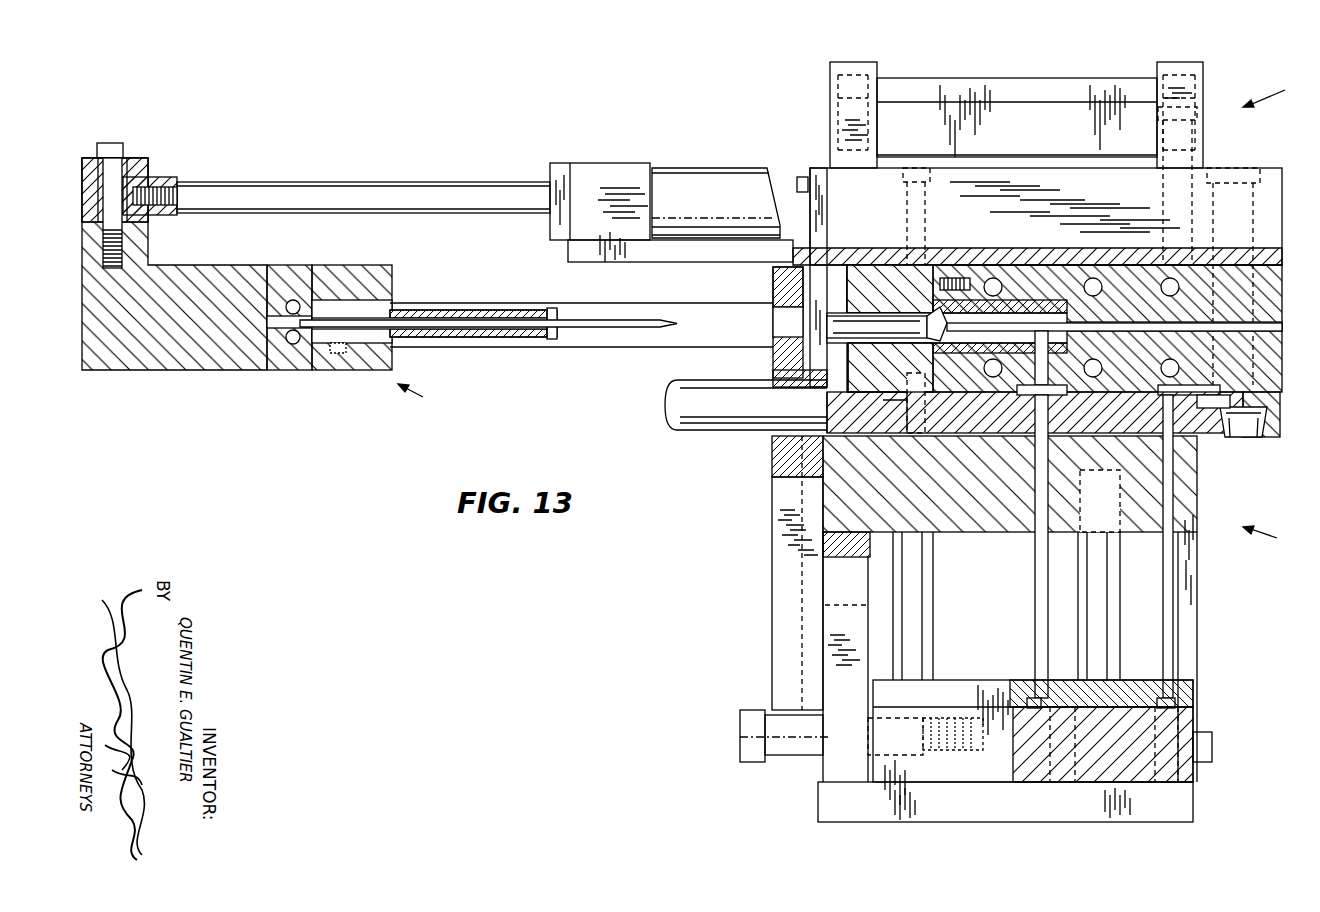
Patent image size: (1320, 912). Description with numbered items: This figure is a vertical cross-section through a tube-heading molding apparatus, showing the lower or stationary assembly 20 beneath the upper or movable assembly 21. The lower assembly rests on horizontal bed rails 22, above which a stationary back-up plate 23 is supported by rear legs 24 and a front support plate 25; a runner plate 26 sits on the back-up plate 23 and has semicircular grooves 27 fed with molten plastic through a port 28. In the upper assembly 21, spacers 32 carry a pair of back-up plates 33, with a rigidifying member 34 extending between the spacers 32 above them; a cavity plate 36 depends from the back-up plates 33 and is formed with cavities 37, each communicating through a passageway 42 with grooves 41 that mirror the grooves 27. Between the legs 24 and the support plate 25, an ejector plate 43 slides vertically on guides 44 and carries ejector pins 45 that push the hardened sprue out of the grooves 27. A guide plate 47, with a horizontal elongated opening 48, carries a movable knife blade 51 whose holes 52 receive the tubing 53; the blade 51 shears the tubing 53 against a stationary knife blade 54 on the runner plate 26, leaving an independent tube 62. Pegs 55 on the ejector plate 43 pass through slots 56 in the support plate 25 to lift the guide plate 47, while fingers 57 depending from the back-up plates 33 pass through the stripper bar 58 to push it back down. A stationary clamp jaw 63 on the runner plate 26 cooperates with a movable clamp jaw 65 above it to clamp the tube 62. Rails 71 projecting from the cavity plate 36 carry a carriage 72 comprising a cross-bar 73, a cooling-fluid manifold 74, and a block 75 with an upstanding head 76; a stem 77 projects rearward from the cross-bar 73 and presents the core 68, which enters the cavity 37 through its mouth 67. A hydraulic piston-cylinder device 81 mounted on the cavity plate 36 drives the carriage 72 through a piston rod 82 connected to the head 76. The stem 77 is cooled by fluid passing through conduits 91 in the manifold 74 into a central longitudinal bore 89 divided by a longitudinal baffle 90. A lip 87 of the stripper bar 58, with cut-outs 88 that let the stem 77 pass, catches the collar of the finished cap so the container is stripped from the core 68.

The lower assembly 20 is at (1276, 541).
The upper assembly 21 is at (1272, 92).
The bed rails 22 is at (1000, 810).
The back-up plate 23 is at (1197, 487).
The rear legs 24 is at (1198, 625).
The front support plate 25 is at (825, 670).
The runner plate 26 is at (1280, 405).
The grooves 27 is at (1200, 430).
The port 28 is at (1255, 435).
The spacers 32 is at (832, 70).
The back-up plates 33 is at (1270, 210).
The rigidifying member 34 is at (1013, 80).
The cavity plate 36 is at (1268, 297).
The cavities 37 is at (1000, 312).
The grooves 41 is at (1212, 385).
The passageway 42 is at (1038, 368).
The ejector plate 43 is at (950, 685).
The guides 44 is at (930, 572).
The ejector pins 45 is at (1033, 600).
The guide plate 47 is at (775, 570).
The elongated opening 48 is at (776, 440).
The movable knife blade 51 is at (833, 438).
The holes 52 is at (830, 425).
The tubing 53 is at (715, 428).
The stationary knife blade 54 is at (852, 362).
The pegs 55 is at (745, 737).
The slots 56 is at (825, 605).
The fingers 57 is at (813, 222).
The stripper bar 58 is at (777, 277).
The tube 62 is at (905, 315).
The stationary clamp jaw 63 is at (940, 395).
The movable clamp jaw 65 is at (935, 250).
The mouth 67 is at (940, 360).
The core 68 is at (603, 310).
The rails 71 is at (628, 340).
The carriage 72 is at (426, 400).
The cross-bar 73 is at (345, 375).
The cooling-fluid manifold 74 is at (270, 375).
The block 75 is at (145, 375).
The head 76 is at (125, 150).
The stem 77 is at (505, 310).
The hydraulic piston-cylinder device 81 is at (695, 170).
The piston rod 82 is at (455, 190).
The lip 87 is at (773, 330).
The cut-outs 88 is at (790, 336).
The central longitudinal bore 89 is at (415, 310).
The longitudinal baffle 90 is at (457, 318).
The conduits 91 is at (298, 300).